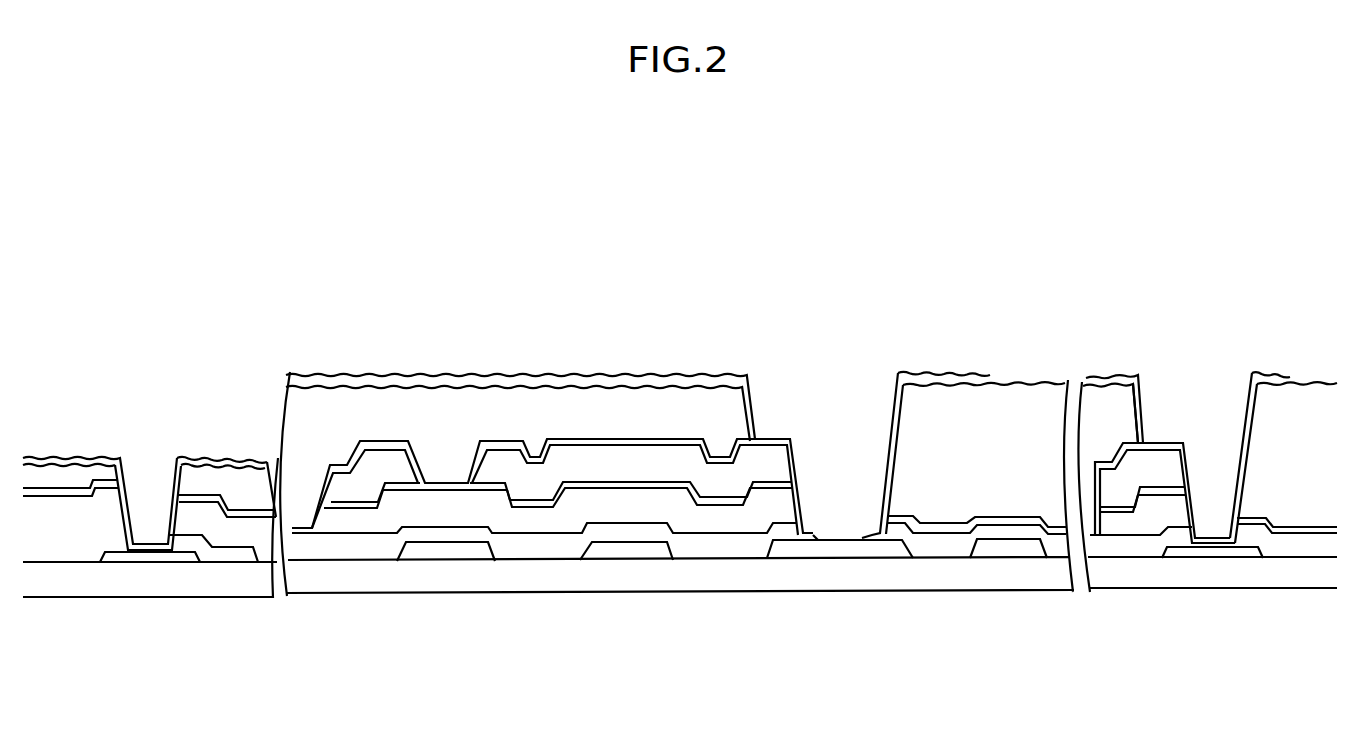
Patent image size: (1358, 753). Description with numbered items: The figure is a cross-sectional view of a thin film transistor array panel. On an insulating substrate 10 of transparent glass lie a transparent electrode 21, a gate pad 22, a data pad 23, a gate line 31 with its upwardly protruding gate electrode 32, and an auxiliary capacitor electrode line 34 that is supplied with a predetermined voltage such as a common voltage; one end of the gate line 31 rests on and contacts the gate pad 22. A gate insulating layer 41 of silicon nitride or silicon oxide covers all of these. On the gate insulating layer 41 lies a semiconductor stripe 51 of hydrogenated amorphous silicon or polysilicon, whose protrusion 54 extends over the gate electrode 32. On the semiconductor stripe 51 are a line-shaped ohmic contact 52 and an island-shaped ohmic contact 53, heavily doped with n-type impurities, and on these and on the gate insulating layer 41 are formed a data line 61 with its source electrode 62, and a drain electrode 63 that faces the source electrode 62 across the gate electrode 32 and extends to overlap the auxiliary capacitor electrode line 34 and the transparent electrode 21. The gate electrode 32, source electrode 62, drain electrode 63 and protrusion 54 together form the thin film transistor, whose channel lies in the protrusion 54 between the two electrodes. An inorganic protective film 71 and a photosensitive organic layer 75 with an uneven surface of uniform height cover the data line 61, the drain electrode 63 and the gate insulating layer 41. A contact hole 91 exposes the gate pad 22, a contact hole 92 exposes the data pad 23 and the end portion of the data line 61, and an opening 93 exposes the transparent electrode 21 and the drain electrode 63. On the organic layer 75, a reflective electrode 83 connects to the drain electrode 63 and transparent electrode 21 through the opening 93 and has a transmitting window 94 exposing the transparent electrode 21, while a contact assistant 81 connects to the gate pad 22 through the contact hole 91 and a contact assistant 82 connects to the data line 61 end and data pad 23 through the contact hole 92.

The insulating substrate 10 is at (757, 580).
The transparent electrode 21 is at (865, 550).
The gate pad 22 is at (135, 558).
The data pad 23 is at (1232, 550).
The gate line 31 is at (225, 557).
The gate electrode 32 is at (427, 555).
The auxiliary capacitor electrode line 34 is at (628, 553).
The gate insulating layer 41 is at (90, 542).
The semiconductor stripe 51 is at (380, 525).
The line-shaped ohmic contact 52 is at (348, 505).
The island-shaped ohmic contact 53 is at (537, 503).
The protrusion of semiconductor stripe 54 is at (467, 517).
The data line 61 is at (1160, 470).
The source electrode 62 is at (395, 462).
The drain electrode 63 is at (502, 460).
The protective film 71 is at (48, 495).
The organic layer 75 is at (60, 477).
The contact assistant 81 is at (92, 457).
The contact assistant 82 is at (1110, 383).
The reflective electrode 83 is at (447, 375).
The contact hole 91 is at (147, 477).
The contact hole 92 is at (1215, 396).
The opening 93 is at (826, 398).
The transmitting window 94 is at (830, 542).